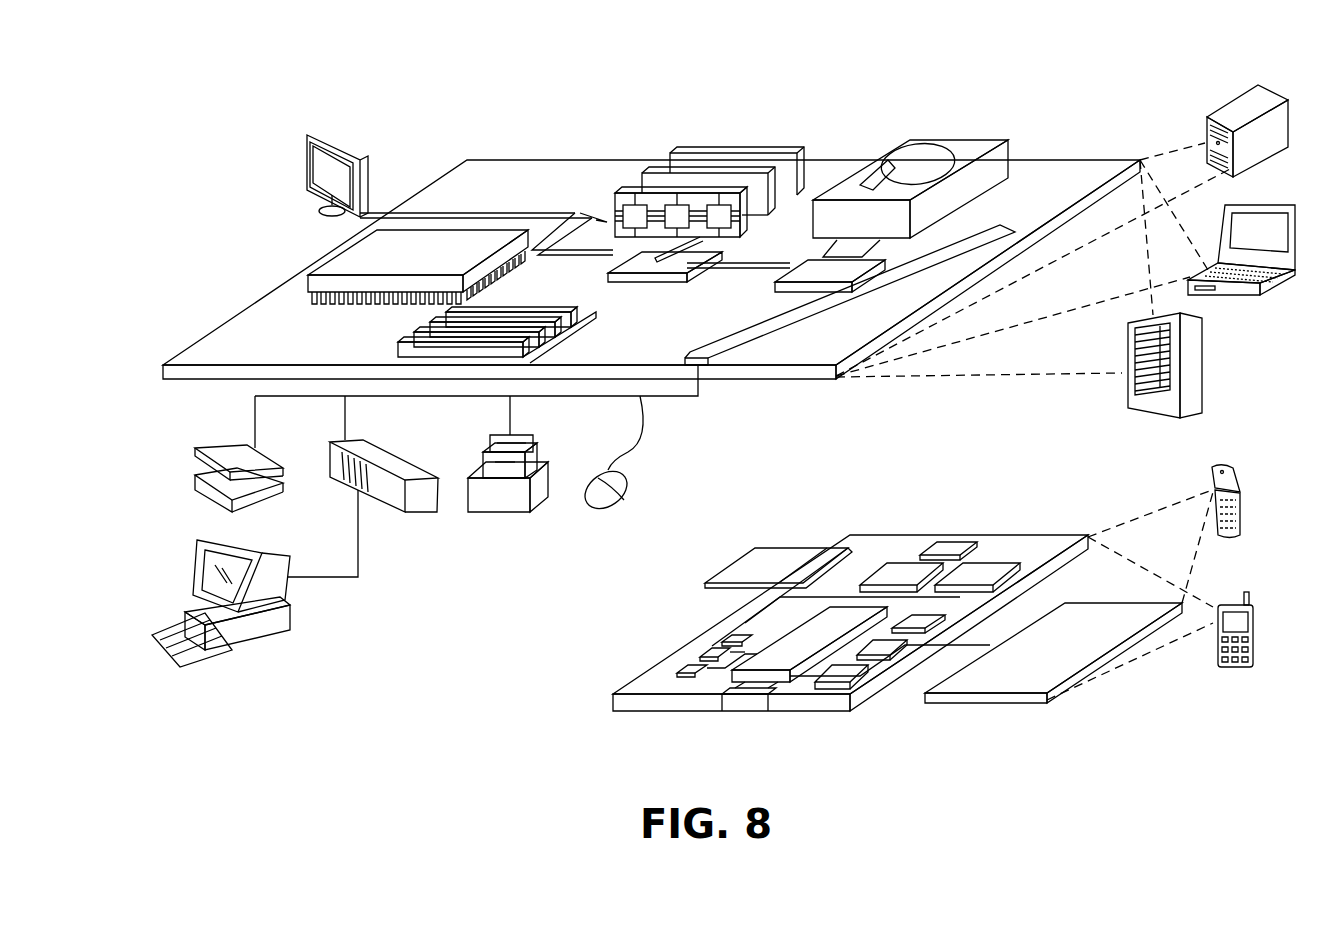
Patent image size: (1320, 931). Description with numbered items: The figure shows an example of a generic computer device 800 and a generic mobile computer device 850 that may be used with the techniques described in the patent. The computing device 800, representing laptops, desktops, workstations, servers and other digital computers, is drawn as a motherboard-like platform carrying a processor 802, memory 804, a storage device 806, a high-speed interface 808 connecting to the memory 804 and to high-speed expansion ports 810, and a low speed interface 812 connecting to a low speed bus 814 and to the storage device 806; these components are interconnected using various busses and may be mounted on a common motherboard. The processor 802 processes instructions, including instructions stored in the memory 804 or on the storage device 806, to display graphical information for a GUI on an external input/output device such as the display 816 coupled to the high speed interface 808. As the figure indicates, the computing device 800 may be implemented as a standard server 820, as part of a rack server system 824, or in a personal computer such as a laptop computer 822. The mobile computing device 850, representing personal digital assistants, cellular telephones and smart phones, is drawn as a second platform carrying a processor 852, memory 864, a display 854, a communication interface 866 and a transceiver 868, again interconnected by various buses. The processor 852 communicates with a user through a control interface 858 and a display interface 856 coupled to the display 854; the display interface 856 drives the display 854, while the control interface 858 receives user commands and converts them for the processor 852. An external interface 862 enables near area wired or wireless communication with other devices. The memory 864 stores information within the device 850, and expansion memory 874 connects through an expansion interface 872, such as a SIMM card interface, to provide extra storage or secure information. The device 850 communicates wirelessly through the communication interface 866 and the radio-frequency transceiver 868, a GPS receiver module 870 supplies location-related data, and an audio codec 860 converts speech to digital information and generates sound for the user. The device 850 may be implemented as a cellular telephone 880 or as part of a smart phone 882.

The computing device 800 is at (424, 108).
The processor 802 is at (334, 254).
The memory 804 is at (738, 154).
The storage device 806 is at (948, 136).
The high-speed interface 808 is at (679, 262).
The high-speed expansion ports 810 is at (420, 330).
The low speed interface 812 is at (806, 264).
The low speed bus 814 is at (703, 349).
The display 816 is at (310, 136).
The standard server 820 is at (1224, 110).
The laptop computer 822 is at (1275, 203).
The rack server system 824 is at (1203, 366).
The mobile computer device 850 is at (566, 722).
The processor 852 is at (780, 648).
The display 854 is at (1088, 620).
The display interface 856 is at (853, 672).
The control interface 858 is at (887, 645).
The audio codec 860 is at (920, 618).
The external interface 862 is at (745, 698).
The memory 864 is at (700, 655).
The communication interface 866 is at (900, 566).
The transceiver 868 is at (985, 570).
The GPS receiver module 870 is at (948, 542).
The expansion interface 872 is at (832, 548).
The expansion memory 874 is at (758, 549).
The cellular telephone 880 is at (1221, 470).
The smart phone 882 is at (1230, 606).